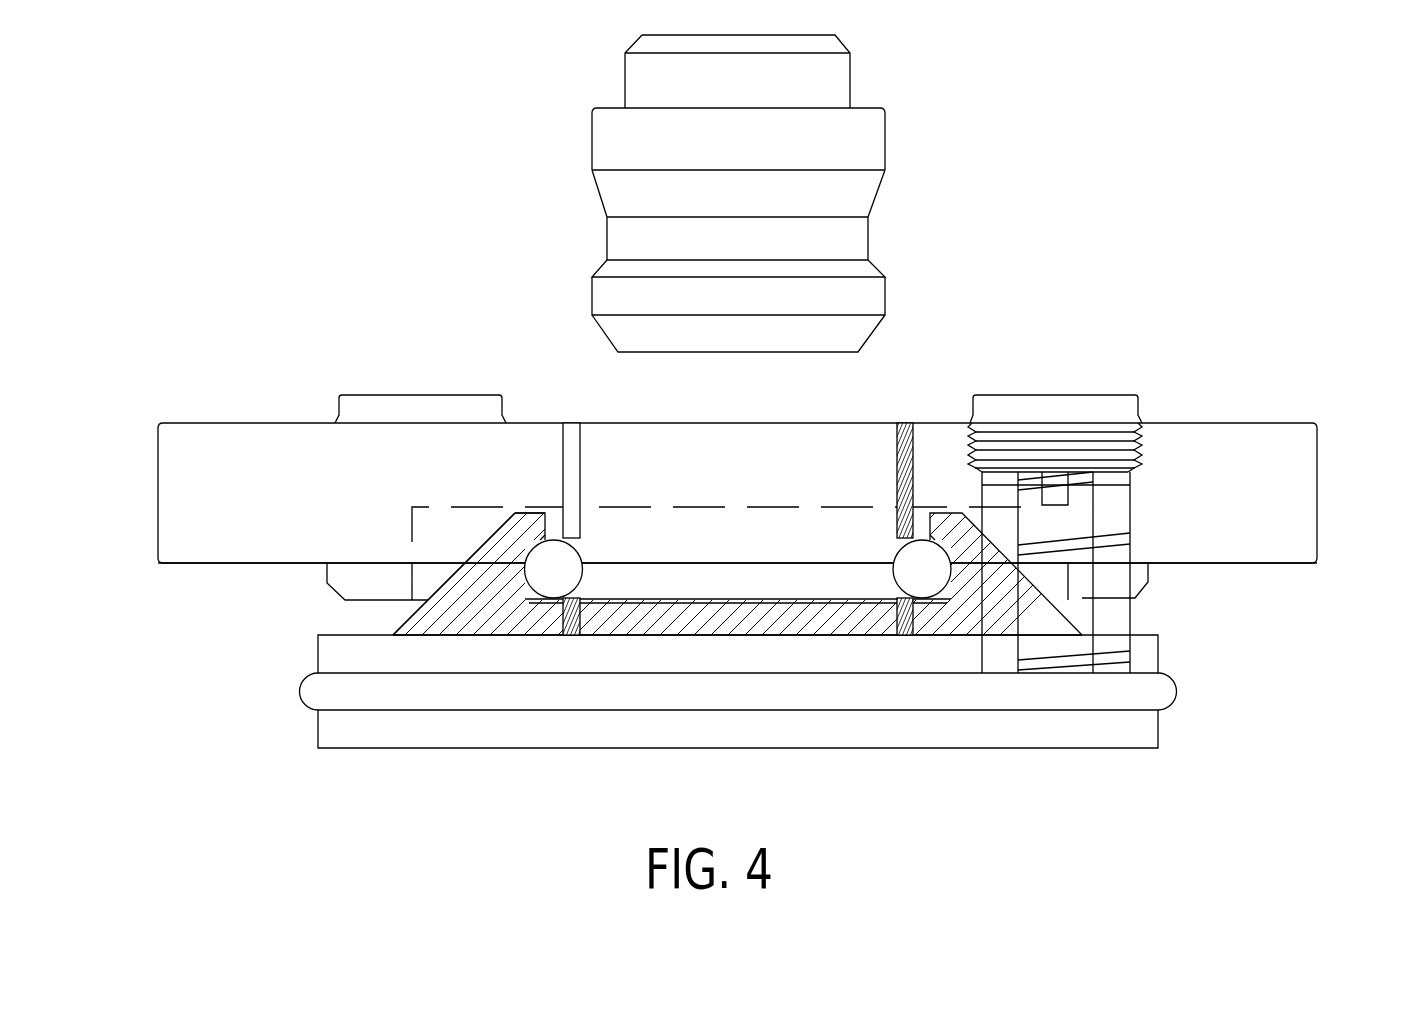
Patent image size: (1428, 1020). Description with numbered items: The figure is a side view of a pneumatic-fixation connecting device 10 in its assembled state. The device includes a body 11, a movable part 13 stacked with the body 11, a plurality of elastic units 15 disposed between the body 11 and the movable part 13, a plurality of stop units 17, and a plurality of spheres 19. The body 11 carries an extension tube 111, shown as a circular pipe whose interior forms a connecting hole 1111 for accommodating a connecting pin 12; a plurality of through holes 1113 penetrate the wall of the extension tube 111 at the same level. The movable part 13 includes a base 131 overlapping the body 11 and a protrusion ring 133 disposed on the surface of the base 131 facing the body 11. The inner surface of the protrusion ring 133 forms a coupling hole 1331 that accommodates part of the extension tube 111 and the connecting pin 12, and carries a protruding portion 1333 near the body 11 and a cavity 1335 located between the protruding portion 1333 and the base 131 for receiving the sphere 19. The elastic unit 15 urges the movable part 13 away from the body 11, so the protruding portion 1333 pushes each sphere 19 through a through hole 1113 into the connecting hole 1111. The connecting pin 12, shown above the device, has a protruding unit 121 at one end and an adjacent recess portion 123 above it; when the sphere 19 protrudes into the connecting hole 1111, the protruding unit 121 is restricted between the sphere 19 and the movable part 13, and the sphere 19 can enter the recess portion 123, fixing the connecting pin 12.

The pneumatic-fixation connecting device 10 is at (273, 173).
The body 11 is at (780, 481).
The extension tube 111 is at (570, 423).
The connecting hole 1111 is at (815, 458).
The through holes 1113 is at (590, 548).
The connecting pin 12 is at (670, 193).
The protruding unit 121 is at (600, 297).
The recess portion 123 is at (600, 233).
The movable part 13 is at (771, 627).
The base 131 is at (1155, 653).
The protrusion ring 133 is at (754, 583).
The coupling hole 1331 is at (732, 590).
The protruding portion 1333 is at (543, 524).
The cavity 1335 is at (525, 578).
The elastic unit 15 is at (1125, 533).
The stop unit 17 is at (385, 405).
The sphere 19 is at (585, 560).